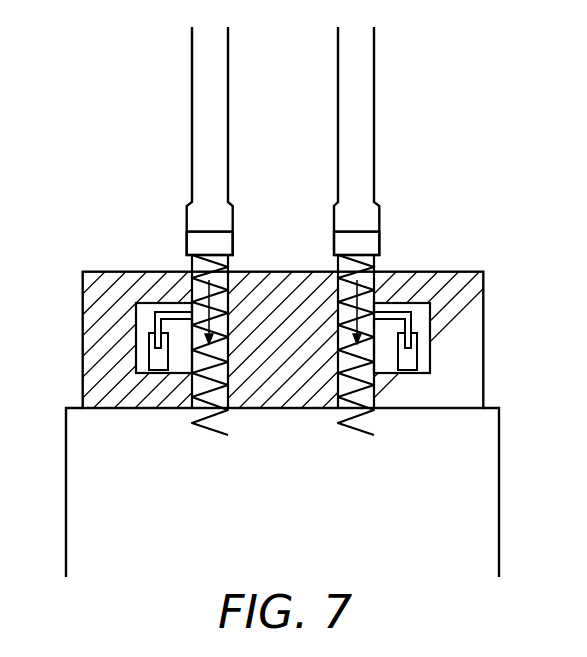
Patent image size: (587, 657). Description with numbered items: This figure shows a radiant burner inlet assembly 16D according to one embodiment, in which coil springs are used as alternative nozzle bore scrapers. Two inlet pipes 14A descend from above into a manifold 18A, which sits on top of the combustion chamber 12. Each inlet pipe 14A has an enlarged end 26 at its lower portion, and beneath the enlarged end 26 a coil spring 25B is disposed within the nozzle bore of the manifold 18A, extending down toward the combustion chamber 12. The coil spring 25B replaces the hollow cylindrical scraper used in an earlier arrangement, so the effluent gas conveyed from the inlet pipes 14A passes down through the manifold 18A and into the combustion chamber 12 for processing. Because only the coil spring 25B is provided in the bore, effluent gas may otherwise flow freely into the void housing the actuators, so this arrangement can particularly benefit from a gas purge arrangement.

The inlet pipe 14A is at (192, 60).
The enlarged end 26 is at (187, 218).
The manifold 18A is at (475, 283).
The coil spring 25B is at (203, 433).
The combustion chamber 12 is at (282, 492).
The radiant burner inlet assembly 16D is at (76, 191).